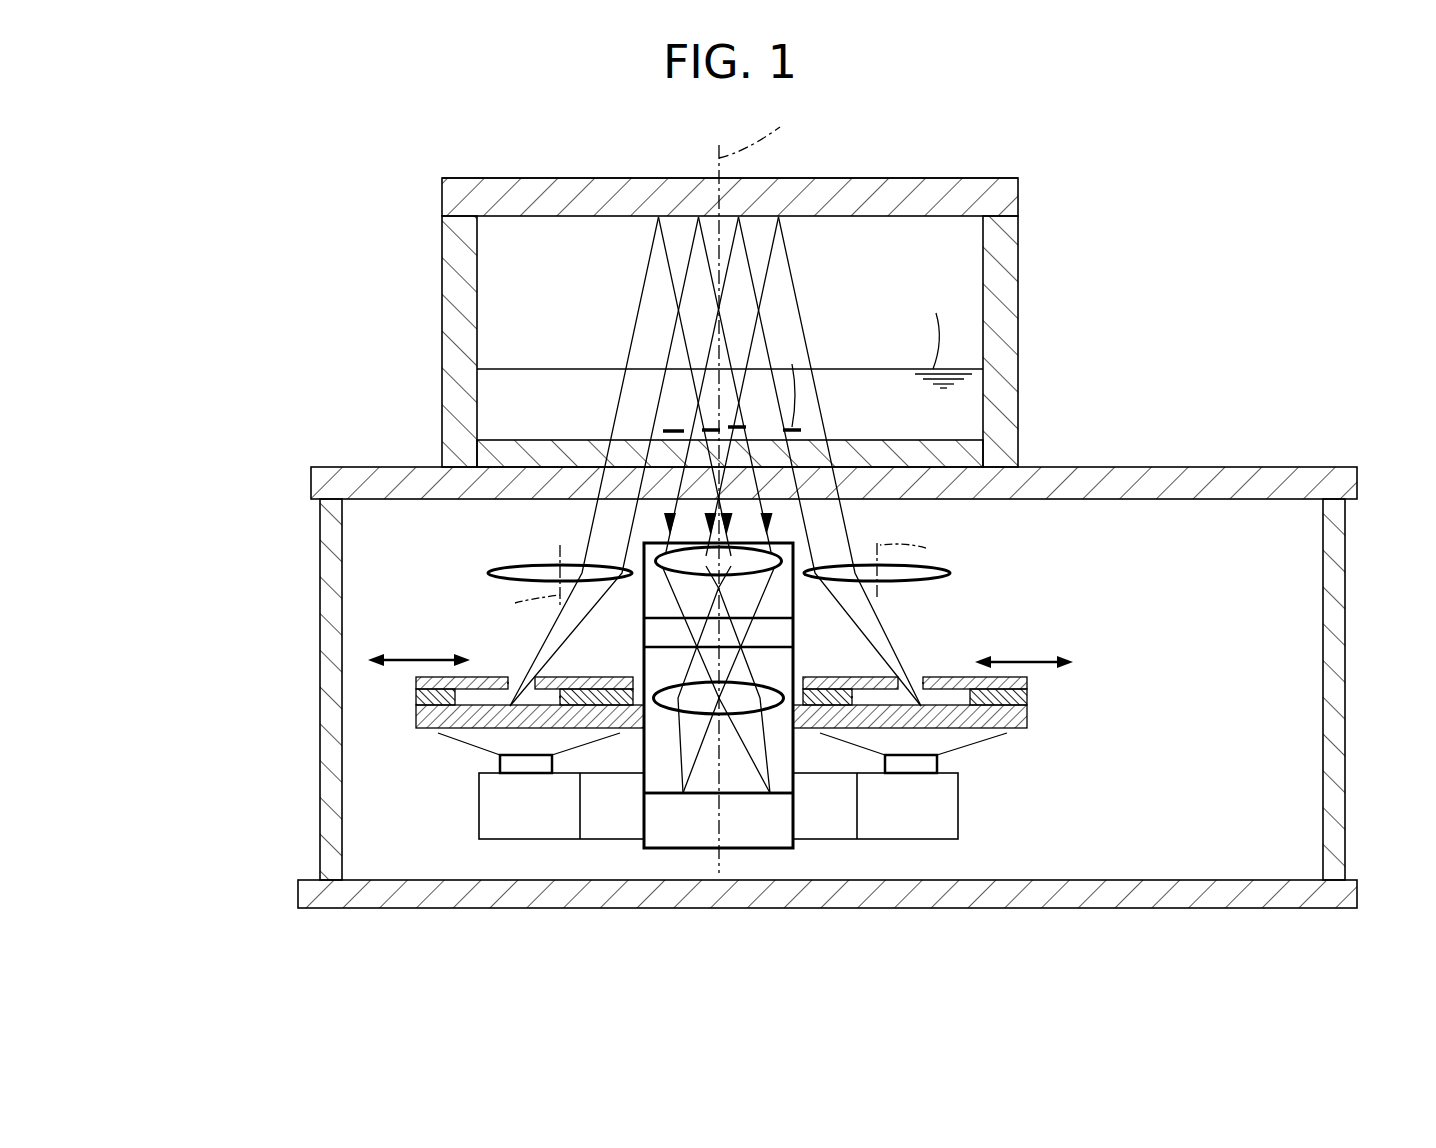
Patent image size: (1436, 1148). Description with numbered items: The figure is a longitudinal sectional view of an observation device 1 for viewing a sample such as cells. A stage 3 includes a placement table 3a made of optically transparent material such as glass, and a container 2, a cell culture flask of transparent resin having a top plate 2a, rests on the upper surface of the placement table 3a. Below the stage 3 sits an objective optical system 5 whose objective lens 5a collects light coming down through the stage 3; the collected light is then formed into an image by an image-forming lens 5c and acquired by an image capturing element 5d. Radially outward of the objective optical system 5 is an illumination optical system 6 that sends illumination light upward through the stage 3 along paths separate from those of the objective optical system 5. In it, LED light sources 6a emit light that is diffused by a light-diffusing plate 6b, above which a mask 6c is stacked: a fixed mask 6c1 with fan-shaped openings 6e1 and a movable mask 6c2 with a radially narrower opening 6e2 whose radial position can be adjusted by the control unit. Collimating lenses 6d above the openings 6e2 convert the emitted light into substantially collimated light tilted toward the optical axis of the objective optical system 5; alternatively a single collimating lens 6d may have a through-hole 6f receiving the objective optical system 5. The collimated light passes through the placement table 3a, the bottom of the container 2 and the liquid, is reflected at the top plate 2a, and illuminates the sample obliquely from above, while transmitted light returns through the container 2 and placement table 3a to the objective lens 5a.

The observation device 1 is at (375, 170).
The container 2 is at (764, 281).
The top plate 2a is at (866, 178).
The stage 3 is at (827, 631).
The placement table 3a is at (1195, 467).
The objective optical system 5 is at (694, 734).
The objective lens 5a is at (783, 553).
The image-forming lens 5c is at (760, 701).
The image capturing element 5d is at (755, 793).
The illumination optical system 6 is at (699, 685).
The LED light source 6a is at (500, 762).
The light-diffusing plate 6b is at (416, 720).
The mask 6c is at (699, 695).
The fixed mask 6c1 is at (416, 698).
The movable mask 6c2 is at (416, 684).
The collimating lens 6d is at (488, 573).
The opening 6e1 is at (558, 697).
The opening 6e2 is at (510, 678).
The through-hole 6f is at (805, 575).